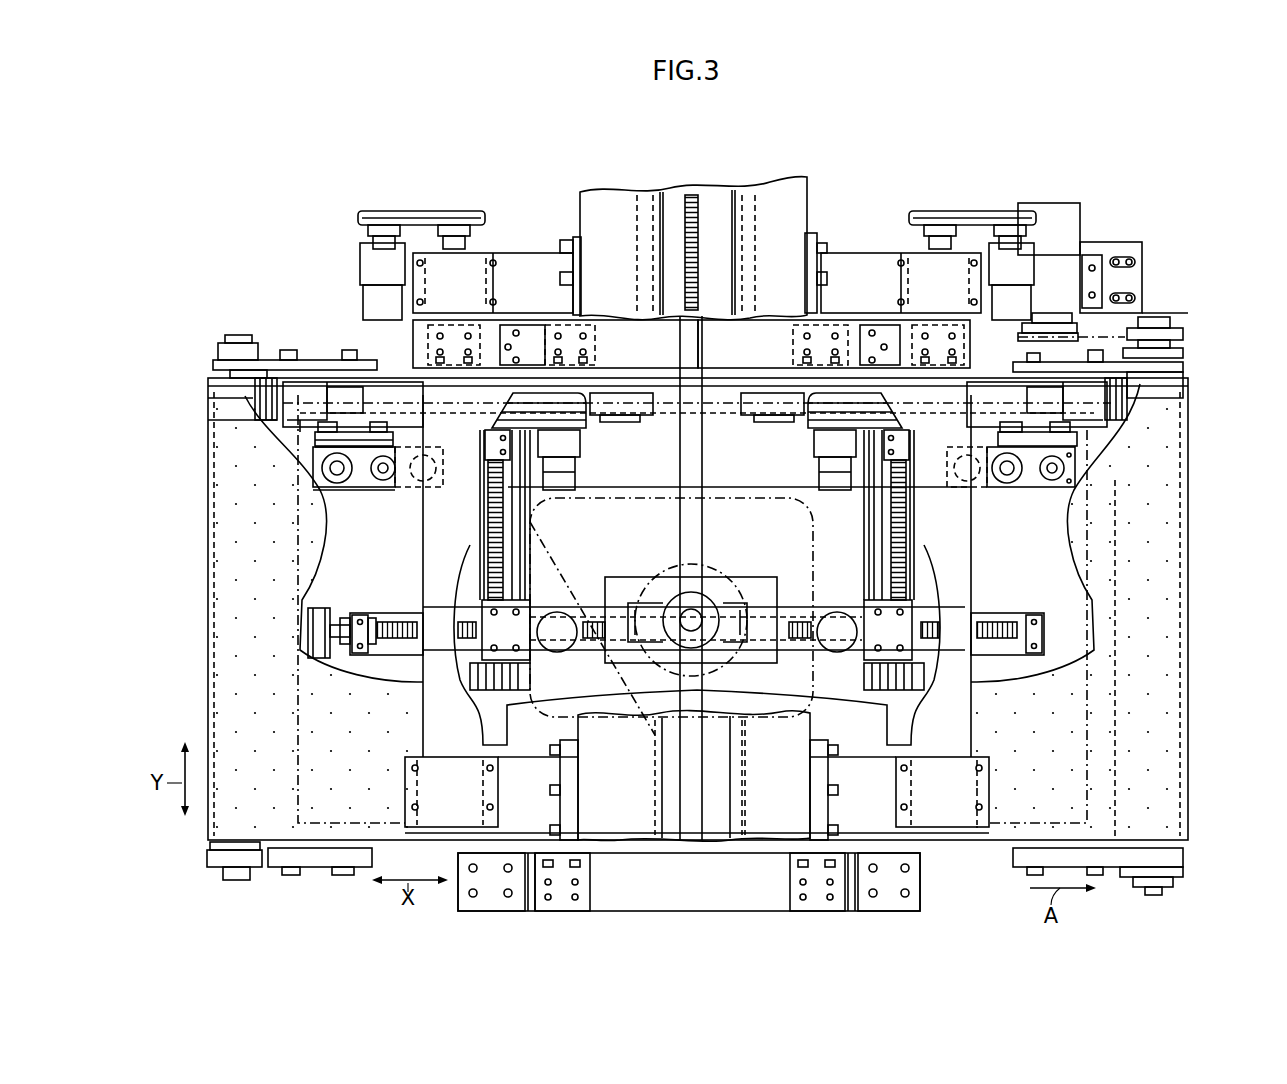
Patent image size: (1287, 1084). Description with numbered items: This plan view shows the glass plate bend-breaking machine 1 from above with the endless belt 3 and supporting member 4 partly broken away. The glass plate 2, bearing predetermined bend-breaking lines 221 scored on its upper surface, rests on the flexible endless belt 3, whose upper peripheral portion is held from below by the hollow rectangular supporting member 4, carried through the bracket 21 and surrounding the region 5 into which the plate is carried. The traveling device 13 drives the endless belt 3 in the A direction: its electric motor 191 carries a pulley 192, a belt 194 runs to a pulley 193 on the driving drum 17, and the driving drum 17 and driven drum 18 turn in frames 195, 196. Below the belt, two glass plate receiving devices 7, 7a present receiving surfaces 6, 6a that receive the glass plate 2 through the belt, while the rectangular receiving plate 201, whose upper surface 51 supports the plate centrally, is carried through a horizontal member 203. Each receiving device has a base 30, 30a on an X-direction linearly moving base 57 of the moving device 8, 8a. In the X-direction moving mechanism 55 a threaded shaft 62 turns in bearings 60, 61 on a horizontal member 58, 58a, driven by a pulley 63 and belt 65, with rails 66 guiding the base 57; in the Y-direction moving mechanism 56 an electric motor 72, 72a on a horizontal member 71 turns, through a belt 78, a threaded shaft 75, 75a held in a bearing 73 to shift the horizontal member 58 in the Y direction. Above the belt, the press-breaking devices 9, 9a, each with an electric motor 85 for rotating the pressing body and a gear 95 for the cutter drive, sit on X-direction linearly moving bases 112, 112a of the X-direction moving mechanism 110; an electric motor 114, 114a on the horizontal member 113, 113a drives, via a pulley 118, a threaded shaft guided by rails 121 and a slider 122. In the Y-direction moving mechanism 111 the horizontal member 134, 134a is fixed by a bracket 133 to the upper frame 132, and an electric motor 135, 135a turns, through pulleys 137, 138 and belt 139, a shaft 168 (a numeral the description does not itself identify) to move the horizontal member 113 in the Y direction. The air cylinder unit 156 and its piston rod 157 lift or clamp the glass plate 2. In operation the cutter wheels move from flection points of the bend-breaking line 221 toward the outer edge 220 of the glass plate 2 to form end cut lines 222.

The glass plate bend-breaking machine 1 is at (1195, 285).
The glass plate 2 is at (740, 495).
The endless belt 3 is at (1150, 625).
The supporting member 4 is at (1000, 830).
The region 5 is at (1070, 532).
The glass plate receiving surface 6 is at (560, 638).
The glass plate receiving surface 6a is at (838, 620).
The glass plate receiving device 7 is at (534, 655).
The glass plate receiving device 7a is at (864, 626).
The moving device 8 is at (398, 608).
The moving device 8a is at (980, 612).
The press-breaking device 9 is at (386, 484).
The press-breaking device 9a is at (1030, 476).
The traveling device 13 is at (1110, 240).
The driving drum 17 is at (1185, 378).
The driven drum 18 is at (218, 856).
The bracket 21 is at (848, 300).
The base 30 is at (505, 668).
The slide 30a is at (905, 650).
The upper surface 51 is at (694, 613).
The X-direction moving mechanism 55 is at (355, 618).
The Y-direction moving mechanism 56 is at (586, 440).
The X-direction linearly moving base 57 is at (488, 620).
The horizontal member 58 is at (712, 577).
The bearing block 58a is at (1010, 613).
The bearing 60 is at (365, 653).
The bearing 61 is at (660, 603).
The threaded shaft 62 is at (386, 613).
The pulley 63 is at (308, 630).
The belt 65 is at (352, 638).
The pair of rails 66 is at (370, 618).
The horizontal member 71 is at (555, 472).
The electric motor 72 is at (580, 450).
The electric motor 72a is at (820, 458).
The bearing 73 is at (485, 435).
The threaded shaft 75 is at (490, 530).
The vertical ball screw 75a is at (908, 540).
The belt 78 is at (560, 385).
The electric motor 85 is at (486, 446).
The pulley or gear 95 is at (340, 490).
The X-direction moving mechanism 110 is at (286, 425).
The Y-direction moving mechanism 111 is at (382, 237).
The X-direction linearly moving base 112 is at (330, 445).
The slider 112a is at (1080, 440).
The horizontal member 113 is at (555, 371).
The cross beam 113a is at (720, 400).
The electric motor 114 is at (308, 395).
The electric motor 114a is at (1130, 405).
The pulley 118 is at (255, 398).
The pair of rails 121 is at (312, 440).
The slider 122 is at (345, 432).
The upper frame 132 is at (703, 236).
The bracket 133 is at (540, 265).
The horizontal member 134 is at (430, 722).
The column 134a is at (945, 725).
The electric motor 135 is at (372, 255).
The electric motor 135a is at (1010, 260).
The pulley 137 is at (383, 211).
The pulley 138 is at (466, 211).
The belt 139 is at (420, 225).
The air cylinder unit 156 is at (696, 613).
The piston rod 157 is at (700, 630).
The drive screw 168 is at (700, 240).
The electric motor 191 is at (1060, 225).
The pulley 192 is at (1032, 328).
The pulley 193 is at (1170, 330).
The belt 194 is at (1108, 335).
The frame 195 is at (1115, 860).
The frame 196 is at (305, 868).
The receiving plate 201 is at (628, 577).
The horizontal member 203 is at (704, 447).
The outer edge 220 is at (842, 698).
The predetermined bend-breaking lines 221 is at (780, 735).
The end cut lines 222 is at (830, 497).